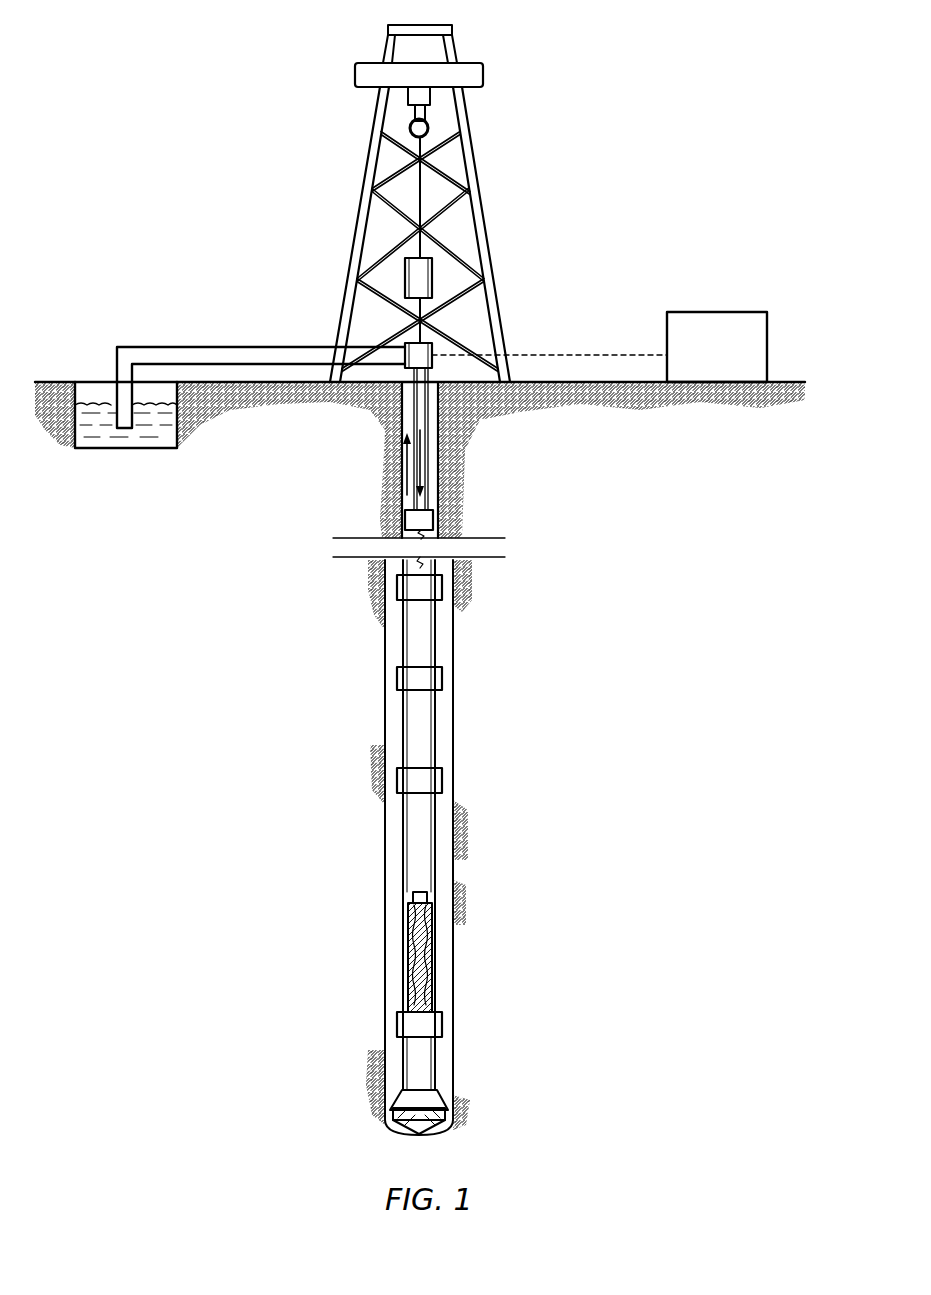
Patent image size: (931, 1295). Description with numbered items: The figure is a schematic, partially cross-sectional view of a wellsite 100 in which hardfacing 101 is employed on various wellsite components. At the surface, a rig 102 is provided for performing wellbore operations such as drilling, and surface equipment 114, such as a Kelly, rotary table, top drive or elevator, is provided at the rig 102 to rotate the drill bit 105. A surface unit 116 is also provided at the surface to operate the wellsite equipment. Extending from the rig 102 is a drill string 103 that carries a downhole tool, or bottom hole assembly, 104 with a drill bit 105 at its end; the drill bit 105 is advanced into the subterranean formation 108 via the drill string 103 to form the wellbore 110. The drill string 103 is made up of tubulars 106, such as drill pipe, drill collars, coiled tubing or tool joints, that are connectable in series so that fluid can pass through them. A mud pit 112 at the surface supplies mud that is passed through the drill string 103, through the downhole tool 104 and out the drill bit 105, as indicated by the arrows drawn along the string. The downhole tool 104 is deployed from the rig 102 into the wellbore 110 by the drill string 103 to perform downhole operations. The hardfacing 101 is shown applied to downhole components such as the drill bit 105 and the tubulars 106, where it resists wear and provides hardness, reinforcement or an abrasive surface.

The wellsite 100 is at (722, 104).
The hardfacing 101 is at (397, 585).
The rig 102 is at (473, 163).
The drill string 103 is at (423, 452).
The downhole tool 104 is at (676, 734).
The drill bit 105 is at (453, 1127).
The tubulars 106 is at (435, 703).
The subterranean formation 108 is at (742, 486).
The wellbore 110 is at (386, 816).
The mud pit 112 is at (107, 442).
The surface equipment 114 is at (418, 183).
The surface unit 116 is at (737, 361).